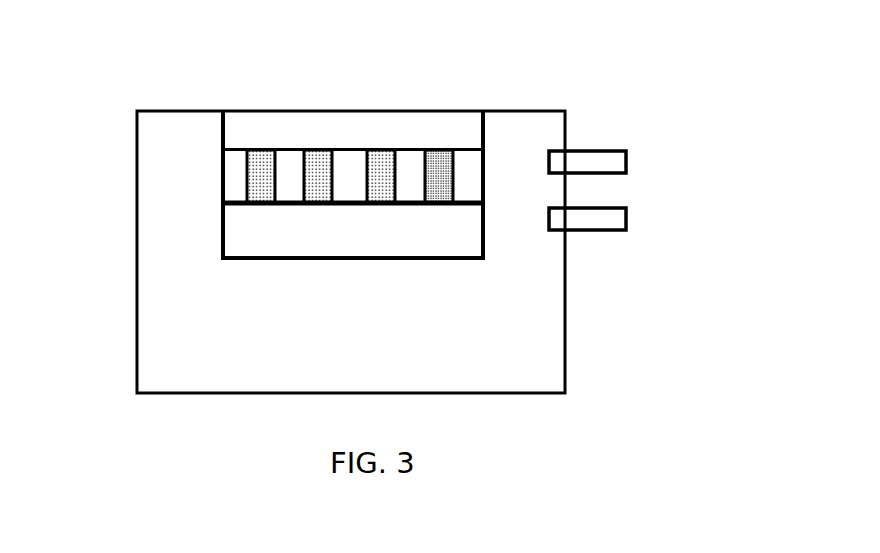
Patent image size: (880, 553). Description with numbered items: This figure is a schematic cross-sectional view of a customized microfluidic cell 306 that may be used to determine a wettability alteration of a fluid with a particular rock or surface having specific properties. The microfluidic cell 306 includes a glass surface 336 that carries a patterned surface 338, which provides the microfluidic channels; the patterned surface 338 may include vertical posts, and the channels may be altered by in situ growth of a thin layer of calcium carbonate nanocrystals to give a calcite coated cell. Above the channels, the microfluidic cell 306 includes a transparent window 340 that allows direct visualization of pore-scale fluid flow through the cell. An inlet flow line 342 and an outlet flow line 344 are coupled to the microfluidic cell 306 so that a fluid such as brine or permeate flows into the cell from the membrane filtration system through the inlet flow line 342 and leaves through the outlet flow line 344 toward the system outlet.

The microfluidic cell 306 is at (170, 280).
The glass surface 336 is at (332, 245).
The patterned surface 338 is at (385, 169).
The transparent window 340 is at (315, 113).
The inlet flow line 342 is at (617, 147).
The outlet flow line 344 is at (603, 232).